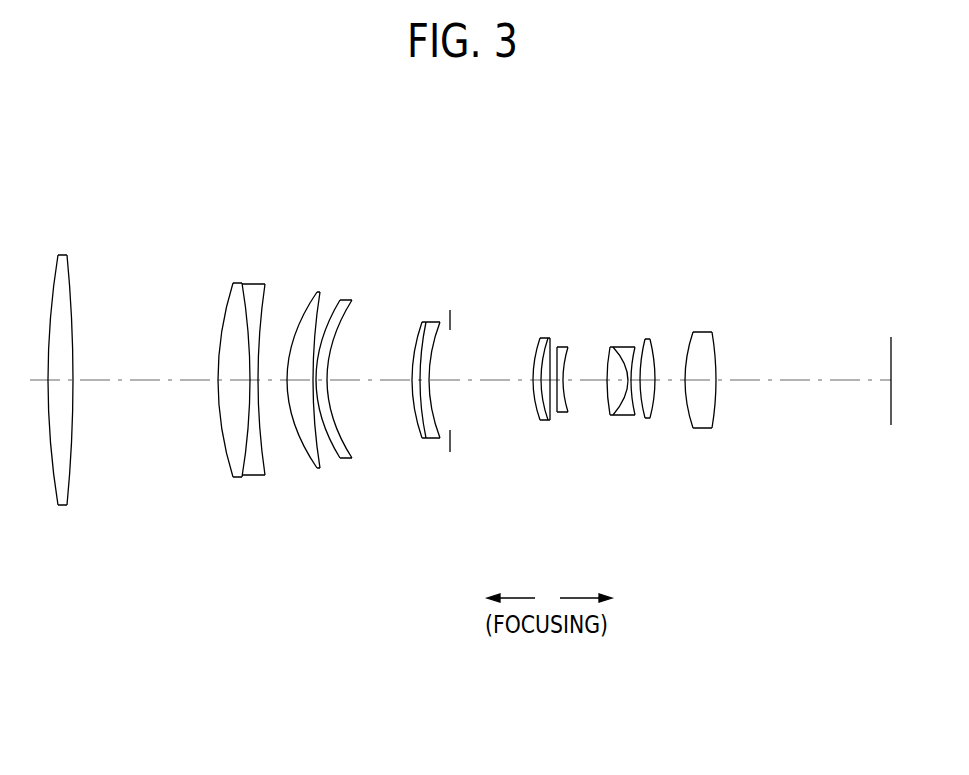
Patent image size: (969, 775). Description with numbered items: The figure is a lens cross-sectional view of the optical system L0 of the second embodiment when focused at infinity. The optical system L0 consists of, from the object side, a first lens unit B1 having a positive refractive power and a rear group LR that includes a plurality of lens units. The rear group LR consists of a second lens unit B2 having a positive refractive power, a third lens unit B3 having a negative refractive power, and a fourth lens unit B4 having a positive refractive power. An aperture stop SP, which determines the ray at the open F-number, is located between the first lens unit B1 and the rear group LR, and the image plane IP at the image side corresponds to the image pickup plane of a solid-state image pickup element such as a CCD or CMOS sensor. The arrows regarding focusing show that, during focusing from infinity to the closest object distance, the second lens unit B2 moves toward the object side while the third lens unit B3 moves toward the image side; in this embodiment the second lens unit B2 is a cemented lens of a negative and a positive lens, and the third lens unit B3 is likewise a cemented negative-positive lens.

The optical system L0 is at (391, 362).
The first lens unit B1 is at (45, 492).
The second lens unit B2 is at (550, 423).
The third lens unit B3 is at (577, 423).
The fourth lens unit B4 is at (662, 406).
The rear group LR is at (620, 443).
The aperture stop SP is at (450, 328).
The image plane IP is at (891, 353).